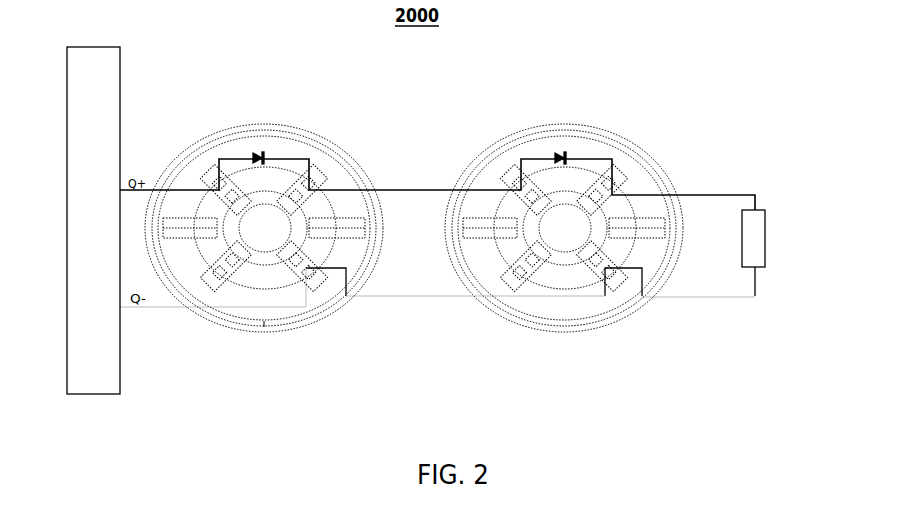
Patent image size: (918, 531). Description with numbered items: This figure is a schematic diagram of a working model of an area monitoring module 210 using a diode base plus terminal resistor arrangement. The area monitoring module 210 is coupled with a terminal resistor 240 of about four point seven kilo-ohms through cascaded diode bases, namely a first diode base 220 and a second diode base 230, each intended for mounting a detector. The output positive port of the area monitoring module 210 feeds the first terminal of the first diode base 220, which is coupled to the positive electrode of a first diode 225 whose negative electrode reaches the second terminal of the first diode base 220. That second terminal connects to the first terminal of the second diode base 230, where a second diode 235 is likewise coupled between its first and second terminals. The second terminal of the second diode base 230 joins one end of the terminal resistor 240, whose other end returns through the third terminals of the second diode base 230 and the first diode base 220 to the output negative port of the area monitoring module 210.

The area monitoring module 210 is at (88, 359).
The first diode base 220 is at (264, 243).
The first diode 225 is at (268, 149).
The second diode base 230 is at (564, 247).
The second diode 235 is at (568, 149).
The terminal resistor 240 is at (772, 247).